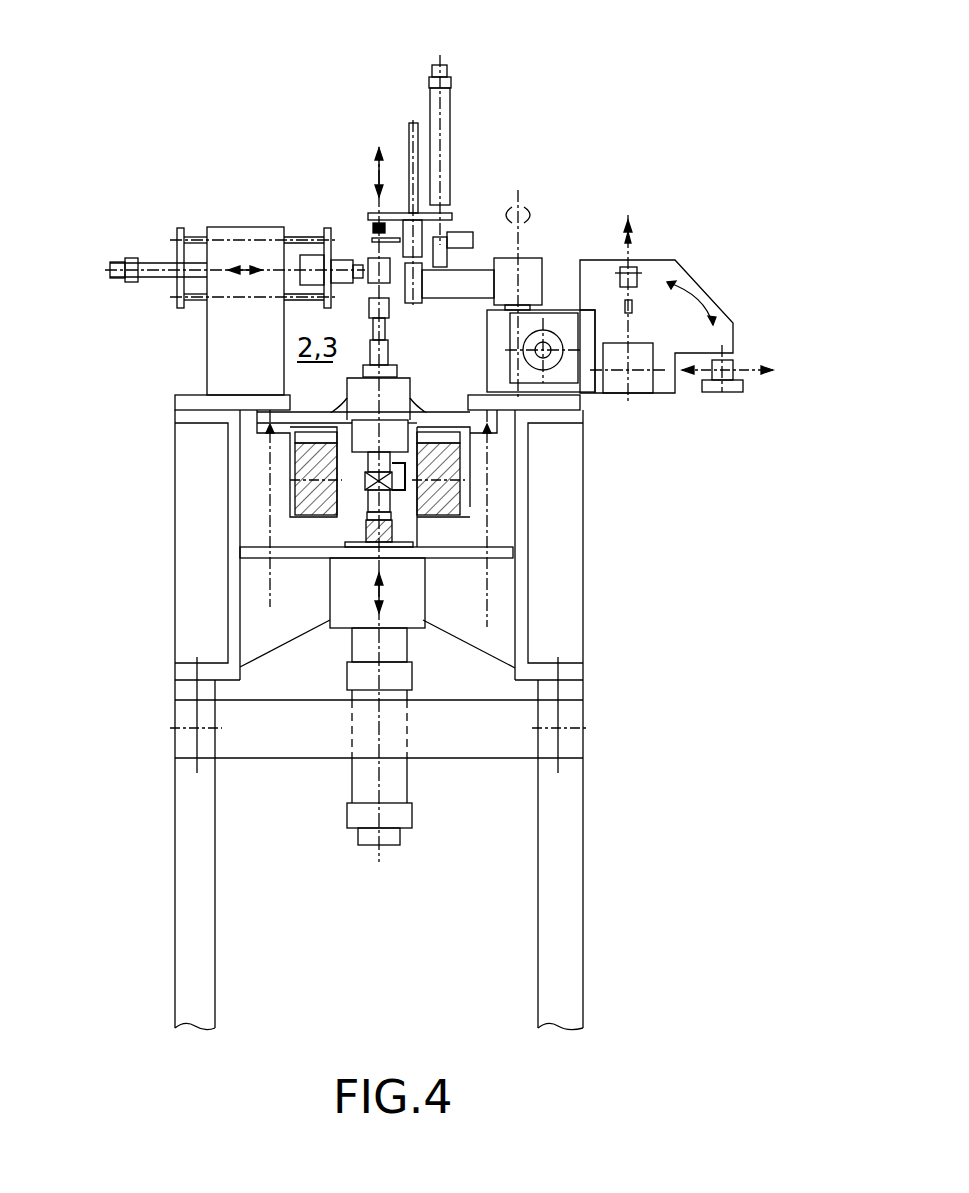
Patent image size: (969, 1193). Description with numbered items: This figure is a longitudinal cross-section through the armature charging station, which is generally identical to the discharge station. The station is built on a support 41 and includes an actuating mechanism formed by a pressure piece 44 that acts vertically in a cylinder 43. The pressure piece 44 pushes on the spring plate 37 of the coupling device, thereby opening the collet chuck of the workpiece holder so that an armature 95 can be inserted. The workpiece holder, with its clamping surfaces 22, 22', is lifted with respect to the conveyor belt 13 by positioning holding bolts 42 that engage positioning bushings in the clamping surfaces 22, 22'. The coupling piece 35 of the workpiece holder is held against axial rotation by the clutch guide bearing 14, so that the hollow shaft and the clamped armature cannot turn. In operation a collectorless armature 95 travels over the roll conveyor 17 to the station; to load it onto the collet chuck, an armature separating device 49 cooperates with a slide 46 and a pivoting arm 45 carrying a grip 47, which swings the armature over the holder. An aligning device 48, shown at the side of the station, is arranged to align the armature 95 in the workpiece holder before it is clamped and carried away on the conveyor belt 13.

The conveyor belt 13 is at (292, 444).
The clutch guide bearing 14 is at (395, 486).
The roll conveyor 17 is at (732, 385).
The clamping surface 22 is at (554, 511).
The clamping surface 22' is at (166, 501).
The coupling piece 35 is at (400, 497).
The spring plate 37 is at (367, 522).
The support 41 is at (233, 512).
The positioning holding bolt 42 is at (490, 462).
The cylinder 43 is at (365, 768).
The pressure piece 44 is at (357, 547).
The pivoting arm 45 is at (527, 270).
The slide 46 is at (445, 208).
The grip 47 is at (463, 238).
The aligning device 48 is at (248, 238).
The armature separating device 49 is at (633, 378).
The armature 95 is at (633, 267).